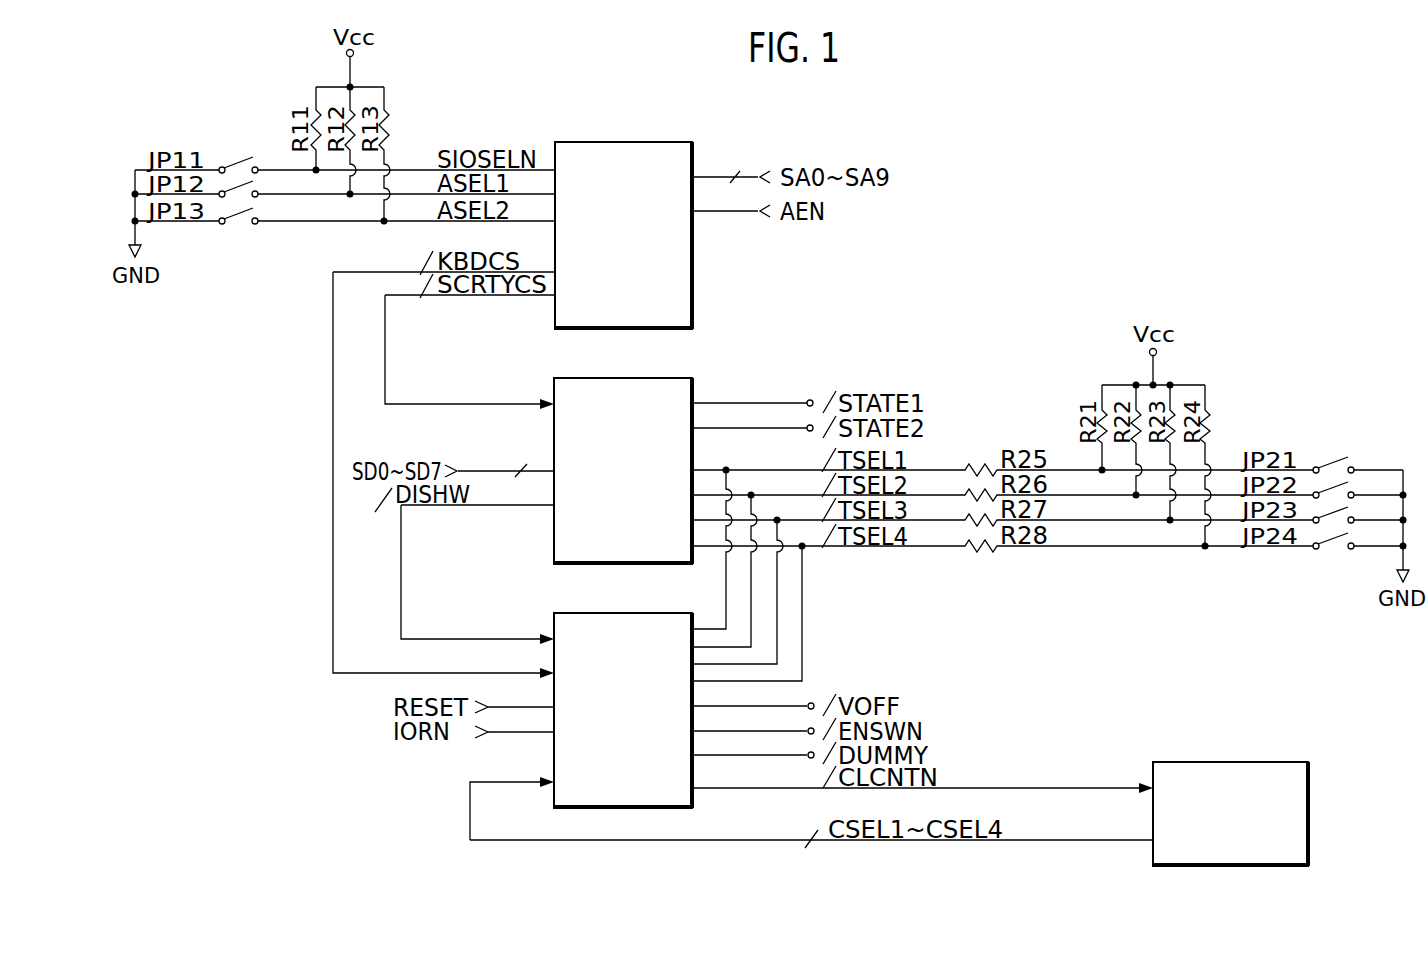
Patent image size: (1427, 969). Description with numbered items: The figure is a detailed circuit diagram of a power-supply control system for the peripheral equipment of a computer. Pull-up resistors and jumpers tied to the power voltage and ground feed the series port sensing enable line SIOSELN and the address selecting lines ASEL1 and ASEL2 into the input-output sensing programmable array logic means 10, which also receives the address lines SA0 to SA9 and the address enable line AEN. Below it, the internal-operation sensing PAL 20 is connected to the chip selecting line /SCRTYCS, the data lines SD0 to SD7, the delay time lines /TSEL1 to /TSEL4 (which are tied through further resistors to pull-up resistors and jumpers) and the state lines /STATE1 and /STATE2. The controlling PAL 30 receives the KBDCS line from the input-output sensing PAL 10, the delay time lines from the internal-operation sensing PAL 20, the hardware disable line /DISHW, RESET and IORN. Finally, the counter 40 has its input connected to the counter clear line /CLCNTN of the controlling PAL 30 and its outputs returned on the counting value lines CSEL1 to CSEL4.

The input-output sensing programmable array logic means 10 is at (625, 142).
The internal-operation sensing PAL 20 is at (554, 388).
The controlling PAL 30 is at (554, 620).
The counter 40 is at (1232, 762).